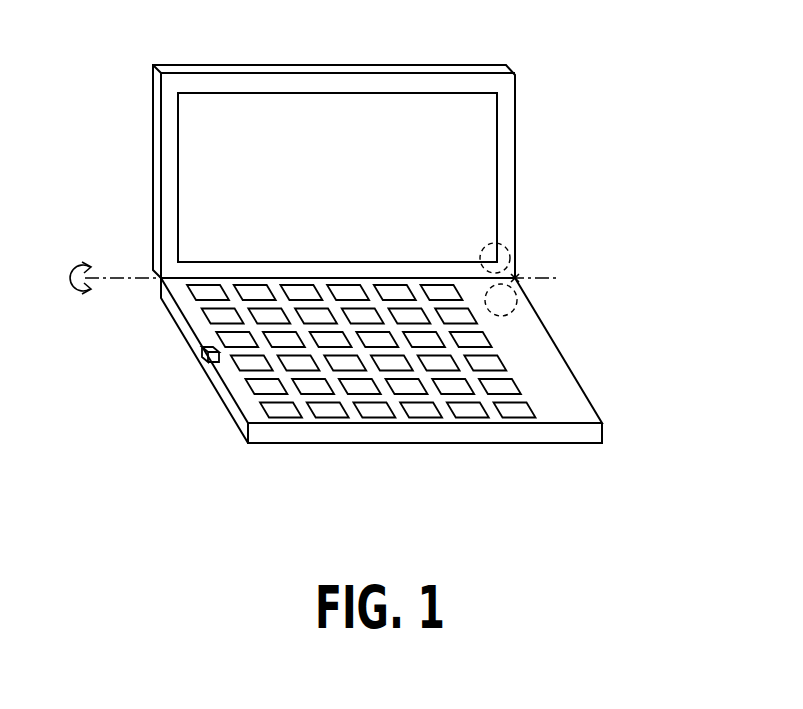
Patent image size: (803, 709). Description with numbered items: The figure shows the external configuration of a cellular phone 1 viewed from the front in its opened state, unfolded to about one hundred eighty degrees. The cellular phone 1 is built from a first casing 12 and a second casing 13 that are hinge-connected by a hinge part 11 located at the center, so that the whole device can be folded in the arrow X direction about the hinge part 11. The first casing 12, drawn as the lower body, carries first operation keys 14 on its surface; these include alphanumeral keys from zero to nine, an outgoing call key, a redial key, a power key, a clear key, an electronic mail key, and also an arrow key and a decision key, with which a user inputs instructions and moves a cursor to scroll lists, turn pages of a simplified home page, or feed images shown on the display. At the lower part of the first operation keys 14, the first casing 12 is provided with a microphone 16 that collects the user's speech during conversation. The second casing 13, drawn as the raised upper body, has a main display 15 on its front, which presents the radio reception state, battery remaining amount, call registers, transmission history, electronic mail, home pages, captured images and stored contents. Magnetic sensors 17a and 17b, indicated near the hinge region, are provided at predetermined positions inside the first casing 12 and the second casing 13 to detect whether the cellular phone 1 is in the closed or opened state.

The cellular phone 1 is at (391, 258).
The hinge part 11 is at (515, 278).
The first casing 12 is at (368, 361).
The second casing 13 is at (370, 143).
The first operation keys 14 is at (213, 441).
The main display 15 is at (432, 93).
The microphone 16 is at (217, 360).
The magnetic sensor 17a is at (507, 247).
The magnetic sensor 17b is at (518, 296).